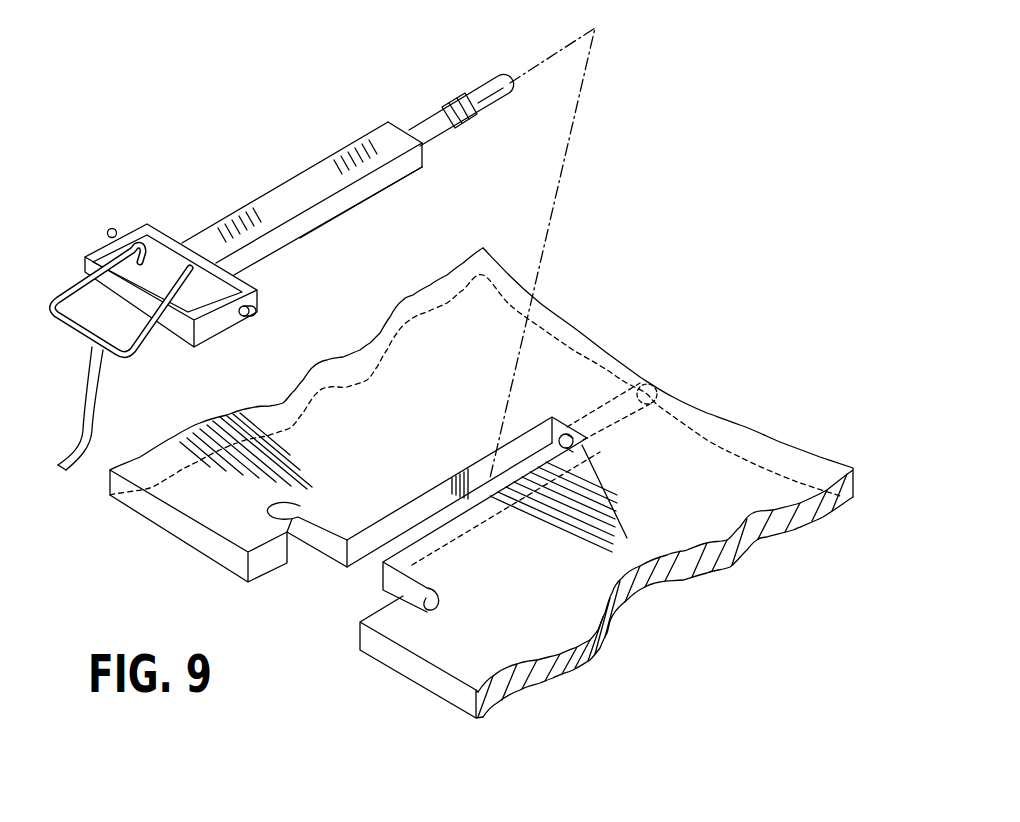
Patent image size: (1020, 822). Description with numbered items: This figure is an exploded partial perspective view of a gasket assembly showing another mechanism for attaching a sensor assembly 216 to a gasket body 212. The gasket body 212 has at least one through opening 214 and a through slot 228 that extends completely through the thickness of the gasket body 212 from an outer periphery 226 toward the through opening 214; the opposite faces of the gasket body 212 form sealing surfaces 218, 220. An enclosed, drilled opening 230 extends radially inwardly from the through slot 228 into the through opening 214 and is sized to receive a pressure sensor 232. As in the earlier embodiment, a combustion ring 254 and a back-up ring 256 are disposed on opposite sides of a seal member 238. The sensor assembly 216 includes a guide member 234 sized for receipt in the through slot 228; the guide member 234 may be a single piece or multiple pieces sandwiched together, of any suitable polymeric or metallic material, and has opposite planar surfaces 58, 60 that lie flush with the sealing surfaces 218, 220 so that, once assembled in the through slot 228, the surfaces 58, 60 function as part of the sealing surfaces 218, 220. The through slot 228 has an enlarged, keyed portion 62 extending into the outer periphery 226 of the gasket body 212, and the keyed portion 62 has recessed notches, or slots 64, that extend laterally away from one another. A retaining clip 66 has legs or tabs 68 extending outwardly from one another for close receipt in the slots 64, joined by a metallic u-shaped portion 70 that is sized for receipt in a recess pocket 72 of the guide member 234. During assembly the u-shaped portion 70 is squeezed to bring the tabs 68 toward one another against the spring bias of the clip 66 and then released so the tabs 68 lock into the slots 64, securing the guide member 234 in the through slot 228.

The sensor assembly 216 is at (234, 150).
The planar surface 60 is at (289, 244).
The guide member 234 is at (387, 190).
The planar surface 58 is at (378, 138).
The pressure sensor 232 is at (506, 80).
The back-up ring 256 is at (443, 105).
The seal member 238 is at (457, 100).
The combustion ring 254 is at (473, 93).
The recess pocket 72 is at (170, 307).
The tabs 68 is at (113, 227).
The retaining clip 66 is at (150, 344).
The u-shaped portion 70 is at (60, 322).
The gasket body 212 is at (466, 218).
The through opening 214 is at (569, 327).
The sealing surface 218 is at (718, 467).
The sealing surface 220 is at (773, 537).
The outer periphery 226 is at (403, 672).
The keyed portion 62 is at (286, 587).
The slots 64 is at (300, 509).
The through slot 228 is at (363, 547).
The drilled opening 230 is at (566, 434).